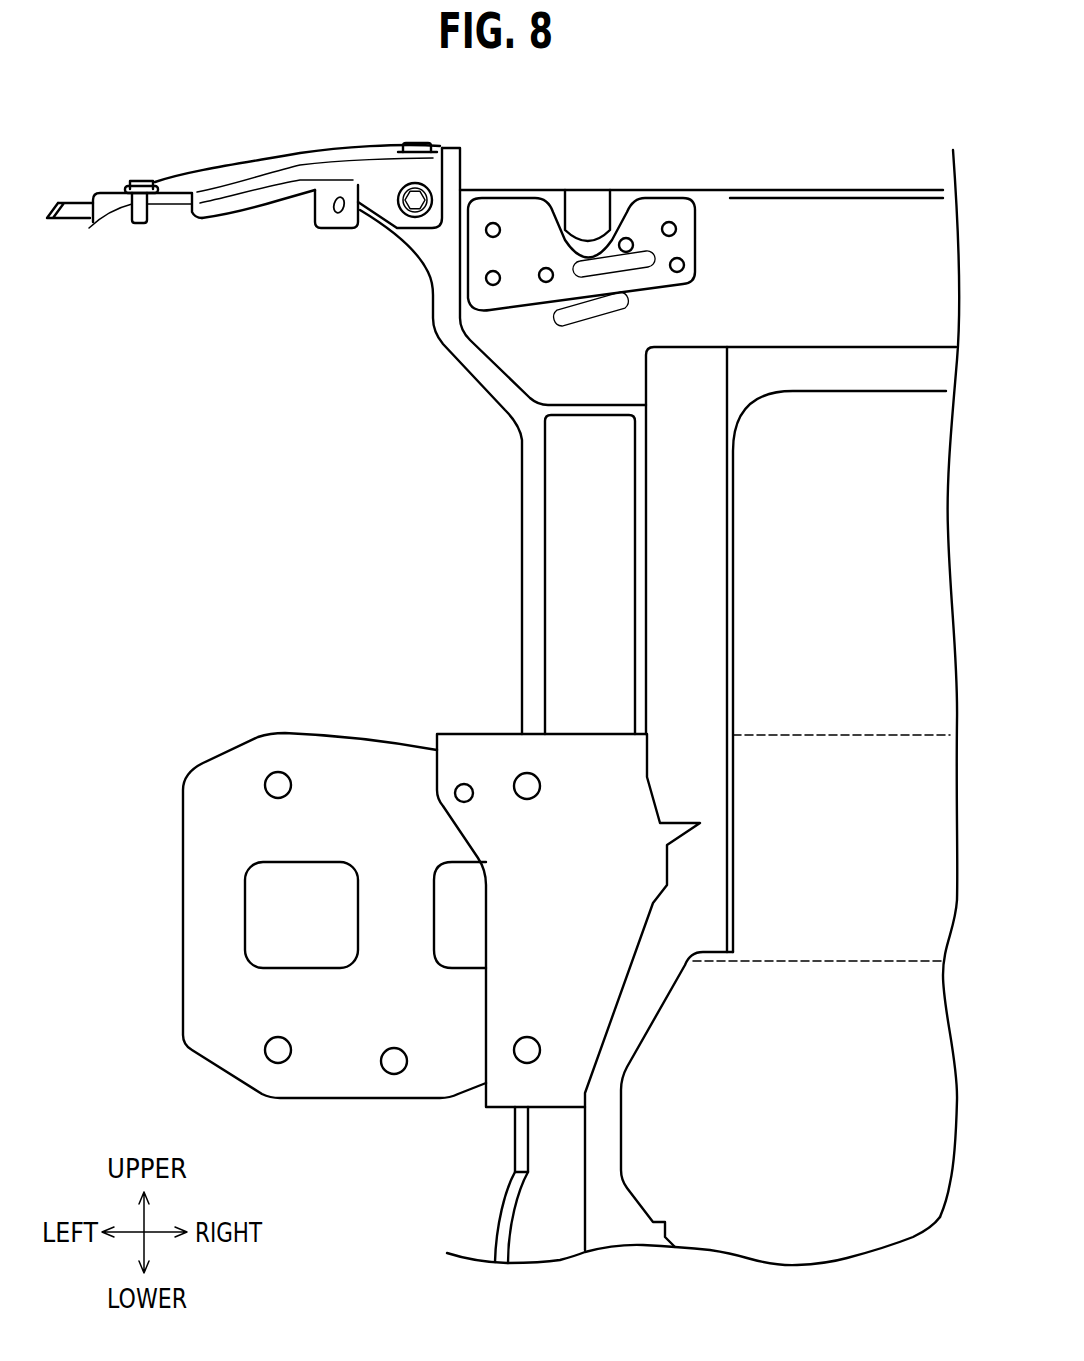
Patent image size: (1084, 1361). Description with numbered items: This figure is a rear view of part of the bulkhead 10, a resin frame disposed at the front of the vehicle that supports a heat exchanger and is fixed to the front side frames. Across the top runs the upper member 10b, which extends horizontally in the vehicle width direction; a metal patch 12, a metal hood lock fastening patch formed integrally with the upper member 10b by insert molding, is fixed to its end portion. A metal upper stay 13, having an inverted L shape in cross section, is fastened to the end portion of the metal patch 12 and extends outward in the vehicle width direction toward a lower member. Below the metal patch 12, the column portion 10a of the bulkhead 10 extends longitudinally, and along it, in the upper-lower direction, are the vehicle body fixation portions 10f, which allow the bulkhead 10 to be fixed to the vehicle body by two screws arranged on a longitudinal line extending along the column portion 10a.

The bulkhead 10 is at (838, 182).
The column portion 10a is at (572, 460).
The upper member 10b is at (777, 243).
The vehicle body fixation portions 10f is at (527, 1050).
The metal patch 12 is at (528, 225).
The upper stay 13 is at (260, 168).